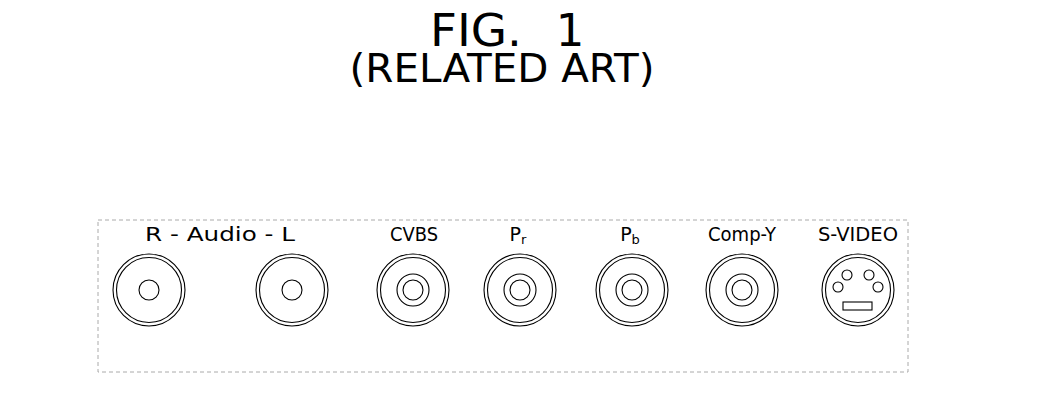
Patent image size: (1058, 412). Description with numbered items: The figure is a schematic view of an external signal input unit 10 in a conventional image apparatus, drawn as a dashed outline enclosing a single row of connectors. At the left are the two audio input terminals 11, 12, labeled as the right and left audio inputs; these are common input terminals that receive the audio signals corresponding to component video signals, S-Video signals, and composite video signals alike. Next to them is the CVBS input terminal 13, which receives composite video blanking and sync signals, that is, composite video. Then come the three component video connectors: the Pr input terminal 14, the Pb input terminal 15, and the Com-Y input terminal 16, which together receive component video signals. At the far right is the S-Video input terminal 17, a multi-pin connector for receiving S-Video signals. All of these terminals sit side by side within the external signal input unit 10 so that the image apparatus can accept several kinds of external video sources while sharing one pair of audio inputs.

The external signal input unit 10 is at (872, 219).
The audio input terminal 11 is at (149, 327).
The audio input terminal 12 is at (292, 327).
The CVBS input terminal 13 is at (413, 327).
The Pr input terminal 14 is at (520, 327).
The Pb input terminal 15 is at (632, 327).
The Com-Y input terminal 16 is at (742, 327).
The S-Video input terminal 17 is at (858, 327).